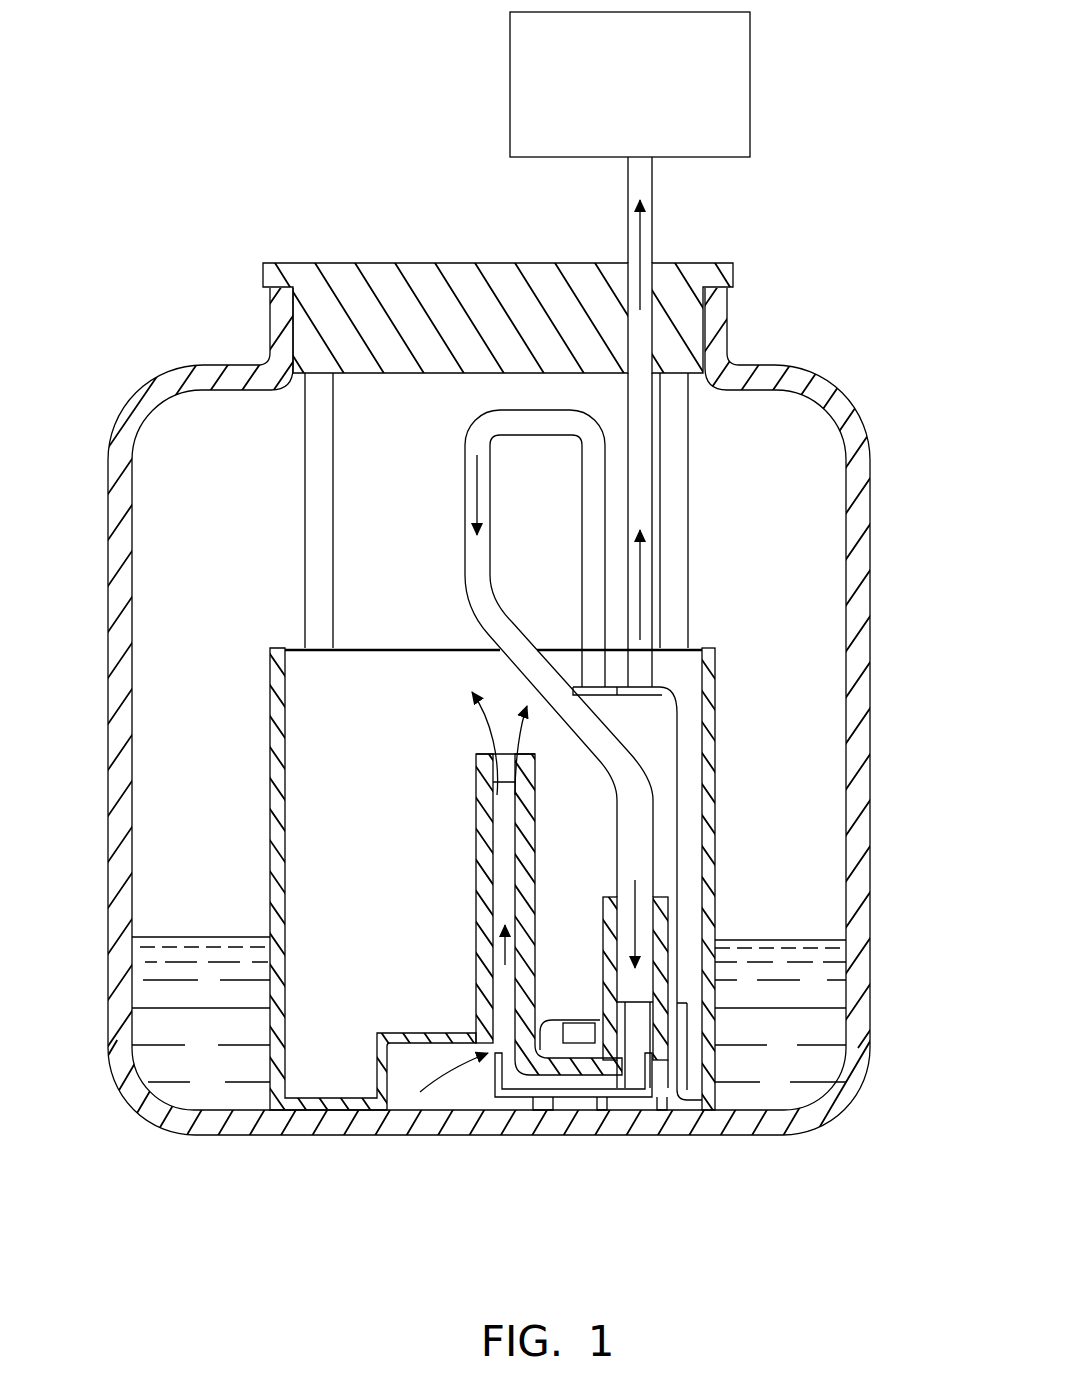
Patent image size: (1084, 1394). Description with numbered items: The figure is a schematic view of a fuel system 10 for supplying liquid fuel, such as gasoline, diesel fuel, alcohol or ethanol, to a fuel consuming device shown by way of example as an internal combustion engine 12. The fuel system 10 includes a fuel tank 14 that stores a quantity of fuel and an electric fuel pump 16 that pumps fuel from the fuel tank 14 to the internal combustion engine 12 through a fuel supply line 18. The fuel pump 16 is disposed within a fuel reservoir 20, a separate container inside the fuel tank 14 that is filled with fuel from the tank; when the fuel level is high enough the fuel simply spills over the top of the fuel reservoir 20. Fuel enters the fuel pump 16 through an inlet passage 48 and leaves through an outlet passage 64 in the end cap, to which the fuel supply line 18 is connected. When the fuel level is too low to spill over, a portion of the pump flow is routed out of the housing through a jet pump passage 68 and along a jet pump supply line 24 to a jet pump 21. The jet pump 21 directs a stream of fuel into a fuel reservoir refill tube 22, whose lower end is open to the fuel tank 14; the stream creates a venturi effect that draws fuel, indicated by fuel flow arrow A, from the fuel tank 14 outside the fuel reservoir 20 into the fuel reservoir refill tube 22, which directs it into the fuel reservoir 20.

The fuel system 10 is at (522, 1214).
The internal combustion engine 12 is at (616, 88).
The fuel tank 14 is at (878, 554).
The fuel pump 16 is at (678, 715).
The fuel supply line 18 is at (628, 217).
The fuel reservoir 20 is at (716, 927).
The jet pump 21 is at (528, 1100).
The fuel reservoir refill tube 22 is at (476, 898).
The jet pump supply line 24 is at (463, 500).
The inlet passage 48 is at (581, 1040).
The outlet passage 64 is at (662, 688).
The jet pump passage 68 is at (570, 688).
The fuel flow arrow A is at (442, 1088).